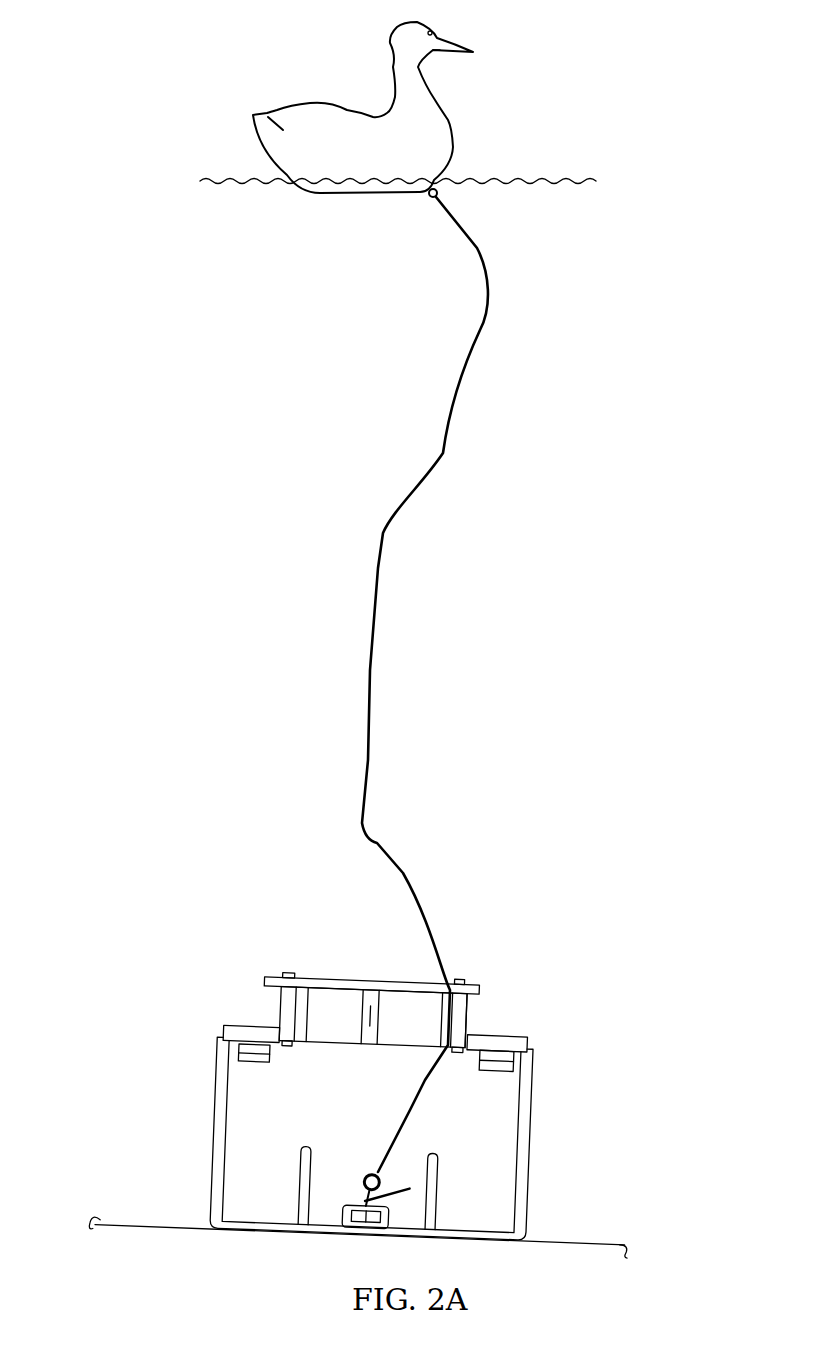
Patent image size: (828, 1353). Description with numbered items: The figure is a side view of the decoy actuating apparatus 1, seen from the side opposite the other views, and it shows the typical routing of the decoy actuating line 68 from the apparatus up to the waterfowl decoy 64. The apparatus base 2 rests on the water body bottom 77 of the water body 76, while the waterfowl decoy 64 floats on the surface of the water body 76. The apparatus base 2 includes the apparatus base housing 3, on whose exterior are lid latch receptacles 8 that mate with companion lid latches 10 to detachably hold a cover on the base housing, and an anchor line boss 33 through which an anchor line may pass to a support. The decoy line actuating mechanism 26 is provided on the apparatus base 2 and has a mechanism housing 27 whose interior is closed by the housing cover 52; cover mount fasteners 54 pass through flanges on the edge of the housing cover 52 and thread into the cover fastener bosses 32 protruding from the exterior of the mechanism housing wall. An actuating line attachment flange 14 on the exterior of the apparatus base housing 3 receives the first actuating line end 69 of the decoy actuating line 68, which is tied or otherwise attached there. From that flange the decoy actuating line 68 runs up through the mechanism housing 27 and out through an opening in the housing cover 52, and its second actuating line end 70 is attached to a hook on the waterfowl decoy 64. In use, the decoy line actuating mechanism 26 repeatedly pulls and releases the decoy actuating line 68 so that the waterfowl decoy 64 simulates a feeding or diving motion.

The decoy actuating apparatus 1 is at (95, 44).
The apparatus base 2 is at (166, 1046).
The apparatus base housing 3 is at (198, 1150).
The lid latch receptacles 8 is at (264, 1062).
The lid latches 10 is at (250, 1035).
The actuating line attachment flange 14 is at (298, 1180).
The decoy line actuating mechanism 26 is at (214, 967).
The mechanism housing 27 is at (482, 1008).
The cover fastener bosses 32 is at (280, 1000).
The anchor line boss 33 is at (372, 1017).
The housing cover 52 is at (345, 980).
The cover mount fasteners 54 is at (287, 975).
The waterfowl decoy 64 is at (420, 133).
The decoy actuating line 68 is at (450, 417).
The first actuating line end 69 is at (407, 1187).
The second actuating line end 70 is at (440, 192).
The water body 76 is at (547, 183).
The water body bottom 77 is at (153, 1223).